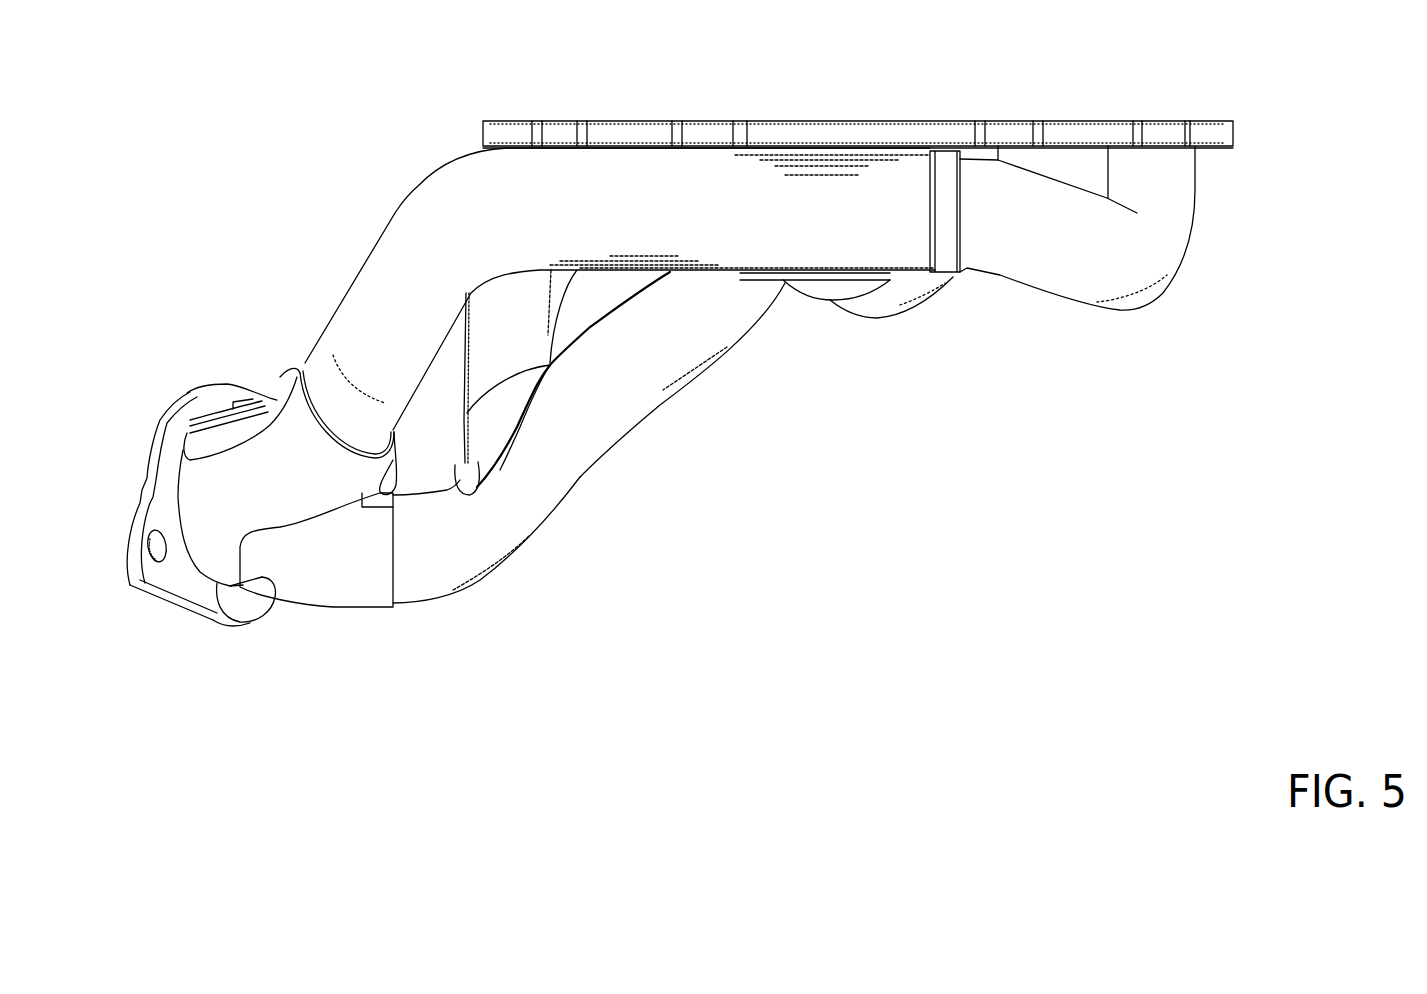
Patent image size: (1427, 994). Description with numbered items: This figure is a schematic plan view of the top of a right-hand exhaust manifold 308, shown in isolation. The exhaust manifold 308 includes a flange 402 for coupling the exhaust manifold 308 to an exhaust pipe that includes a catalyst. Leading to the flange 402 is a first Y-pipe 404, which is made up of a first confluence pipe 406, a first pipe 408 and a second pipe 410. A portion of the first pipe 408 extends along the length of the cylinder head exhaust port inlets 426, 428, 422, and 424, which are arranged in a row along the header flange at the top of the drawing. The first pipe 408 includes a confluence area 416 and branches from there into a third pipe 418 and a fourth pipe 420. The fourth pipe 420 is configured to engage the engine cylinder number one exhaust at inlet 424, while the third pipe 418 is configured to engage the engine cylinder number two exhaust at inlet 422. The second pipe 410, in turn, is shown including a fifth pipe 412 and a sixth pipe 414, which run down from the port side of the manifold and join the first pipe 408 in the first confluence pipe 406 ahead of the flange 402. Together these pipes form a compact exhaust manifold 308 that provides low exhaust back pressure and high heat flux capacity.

The exhaust manifold 308 is at (140, 588).
The flange 402 is at (170, 403).
The first Y-pipe 404 is at (273, 557).
The first confluence pipe 406 is at (218, 580).
The first pipe 408 is at (397, 212).
The second pipe 410 is at (525, 552).
The fifth pipe 412 is at (467, 384).
The sixth pipe 414 is at (713, 363).
The confluence area 416 is at (627, 275).
The third pipe 418 is at (942, 288).
The fourth pipe 420 is at (1137, 302).
The cylinder head exhaust port inlet 422 is at (947, 122).
The cylinder head exhaust port inlet 424 is at (1147, 121).
The cylinder head exhaust port inlet 426 is at (587, 121).
The cylinder head exhaust port inlet 428 is at (732, 121).